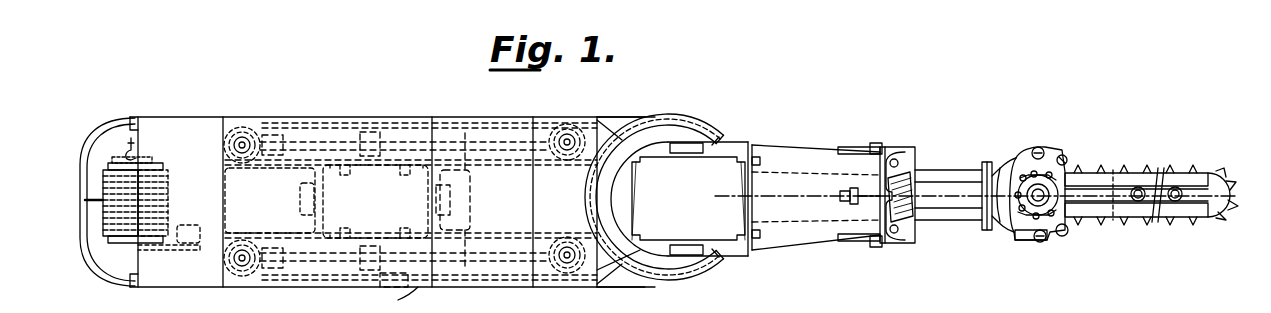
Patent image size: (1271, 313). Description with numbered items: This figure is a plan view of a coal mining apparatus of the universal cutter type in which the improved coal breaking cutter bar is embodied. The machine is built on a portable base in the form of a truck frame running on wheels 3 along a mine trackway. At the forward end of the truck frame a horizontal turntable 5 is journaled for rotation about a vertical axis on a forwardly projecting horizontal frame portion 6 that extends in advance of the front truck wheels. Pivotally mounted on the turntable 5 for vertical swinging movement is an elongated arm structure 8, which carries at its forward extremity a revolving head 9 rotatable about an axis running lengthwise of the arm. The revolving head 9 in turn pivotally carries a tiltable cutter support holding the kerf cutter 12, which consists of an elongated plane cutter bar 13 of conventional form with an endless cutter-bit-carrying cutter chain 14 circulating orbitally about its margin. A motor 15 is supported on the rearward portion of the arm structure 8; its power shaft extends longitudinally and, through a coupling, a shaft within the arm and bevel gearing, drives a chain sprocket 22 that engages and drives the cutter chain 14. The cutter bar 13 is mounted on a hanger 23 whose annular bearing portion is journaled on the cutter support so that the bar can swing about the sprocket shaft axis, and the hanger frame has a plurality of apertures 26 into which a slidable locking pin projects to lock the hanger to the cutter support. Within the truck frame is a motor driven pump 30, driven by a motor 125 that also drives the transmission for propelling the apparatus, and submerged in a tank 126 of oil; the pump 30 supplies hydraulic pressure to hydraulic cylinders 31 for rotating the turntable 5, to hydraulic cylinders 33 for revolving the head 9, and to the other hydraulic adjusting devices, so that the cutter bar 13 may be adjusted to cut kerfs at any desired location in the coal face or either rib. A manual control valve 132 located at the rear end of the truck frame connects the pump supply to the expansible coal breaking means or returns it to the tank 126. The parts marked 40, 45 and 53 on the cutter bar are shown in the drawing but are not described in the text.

The wheels 3 is at (719, 182).
The horizontal turntable 5 is at (645, 116).
The forwardly projecting horizontal frame portion 6 is at (624, 279).
The elongated arm structure 8 is at (813, 234).
The revolving head 9 is at (957, 208).
The kerf cutter 12 is at (1200, 210).
The cutter bar 13 is at (1103, 173).
The endless cutter chain 14 is at (1176, 170).
The motor 15 is at (703, 150).
The chain sprocket 22 is at (1040, 233).
The hanger 23 is at (1010, 224).
The apertures 26 is at (1062, 154).
The motor driven pump 30 is at (302, 190).
The hydraulic cylinders 31 is at (460, 130).
The hydraulic cylinders 33 is at (853, 148).
The guide rails 40 is at (1078, 172).
The nose sprocket 45 is at (1214, 177).
The pivot bolts 53 is at (1176, 203).
The motor 125 is at (377, 183).
The tank 126 is at (218, 240).
The manual control valve 132 is at (136, 155).